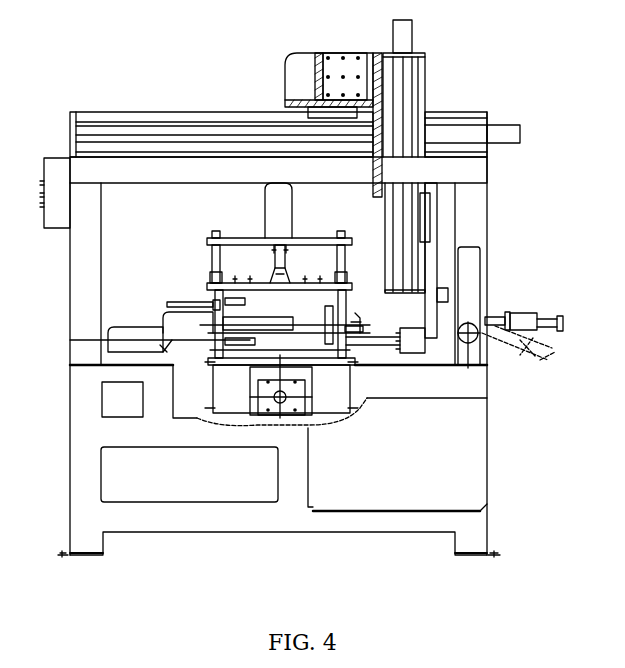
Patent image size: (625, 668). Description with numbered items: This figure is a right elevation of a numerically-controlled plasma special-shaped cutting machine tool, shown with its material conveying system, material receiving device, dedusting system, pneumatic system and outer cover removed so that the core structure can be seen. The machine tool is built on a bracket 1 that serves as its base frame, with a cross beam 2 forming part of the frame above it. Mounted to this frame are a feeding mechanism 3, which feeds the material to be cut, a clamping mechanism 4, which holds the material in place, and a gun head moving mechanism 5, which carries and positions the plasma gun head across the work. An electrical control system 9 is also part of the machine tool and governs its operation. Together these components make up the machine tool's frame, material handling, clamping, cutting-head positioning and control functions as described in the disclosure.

The bracket 1 is at (245, 520).
The cross beam 2 is at (80, 352).
The feeding mechanism 3 is at (332, 410).
The clamping mechanism 4 is at (233, 238).
The gun head moving mechanism 5 is at (438, 127).
The electrical control system 9 is at (58, 170).